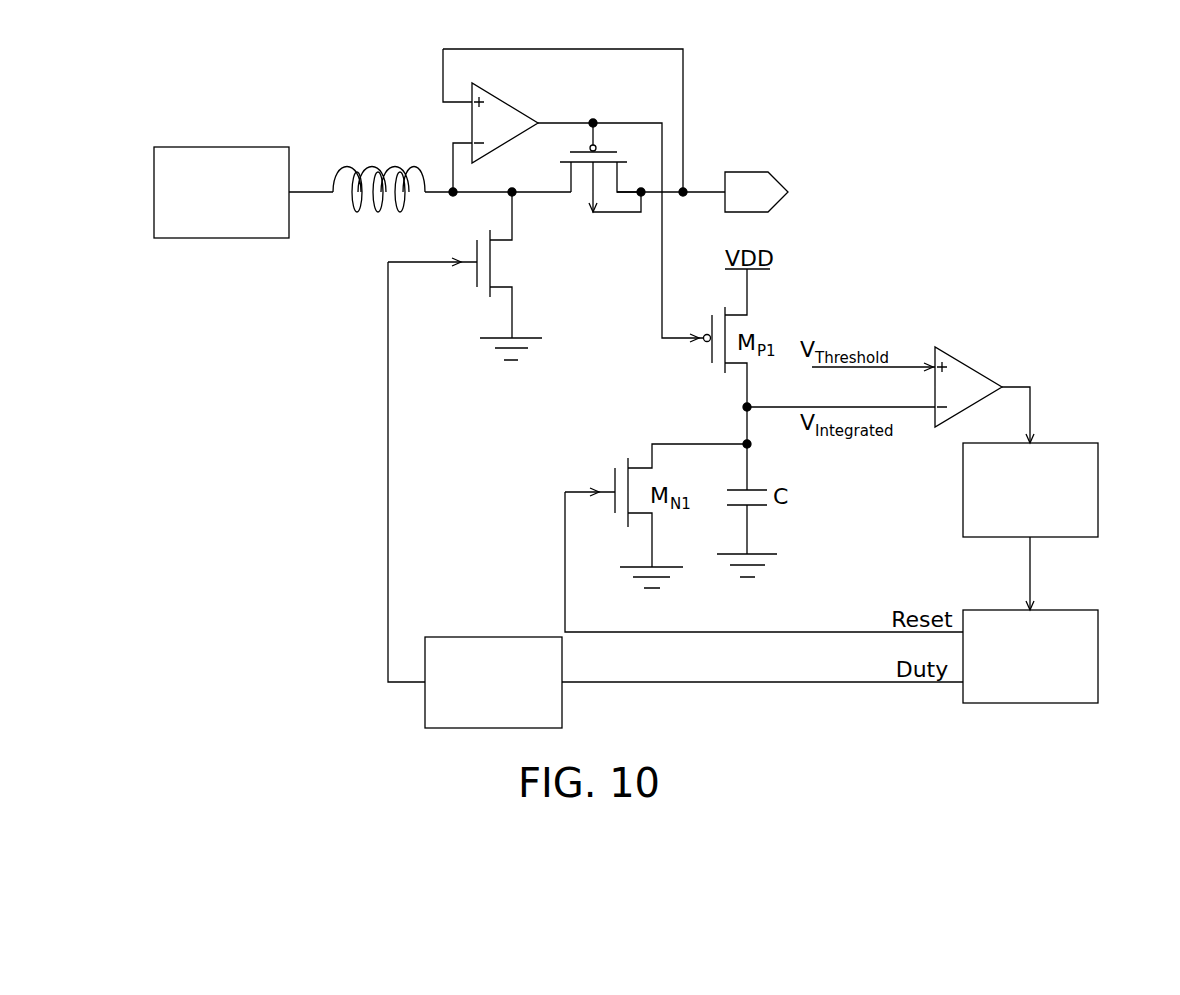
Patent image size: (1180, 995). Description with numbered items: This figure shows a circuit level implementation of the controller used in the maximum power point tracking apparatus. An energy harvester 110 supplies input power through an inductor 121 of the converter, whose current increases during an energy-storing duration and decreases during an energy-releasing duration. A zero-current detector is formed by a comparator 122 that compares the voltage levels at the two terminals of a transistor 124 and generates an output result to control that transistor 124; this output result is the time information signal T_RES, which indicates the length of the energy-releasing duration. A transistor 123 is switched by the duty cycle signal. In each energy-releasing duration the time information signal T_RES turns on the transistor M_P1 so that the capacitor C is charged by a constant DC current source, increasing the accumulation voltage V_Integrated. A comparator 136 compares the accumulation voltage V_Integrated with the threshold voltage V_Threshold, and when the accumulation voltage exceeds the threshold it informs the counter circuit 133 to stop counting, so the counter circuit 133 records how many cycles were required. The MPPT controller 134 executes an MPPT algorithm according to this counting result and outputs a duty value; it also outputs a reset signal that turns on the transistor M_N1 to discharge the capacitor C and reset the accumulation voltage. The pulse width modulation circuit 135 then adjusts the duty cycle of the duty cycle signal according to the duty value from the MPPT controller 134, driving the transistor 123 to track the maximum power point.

The energy harvester 110 is at (263, 147).
The inductor 121 is at (378, 212).
The comparator 122 is at (506, 100).
The transistor 123 is at (477, 277).
The transistor 124 is at (610, 148).
The counter circuit 133 is at (1100, 490).
The MPPT controller 134 is at (1100, 655).
The pulse width modulation circuit 135 is at (452, 637).
The comparator 136 is at (968, 365).